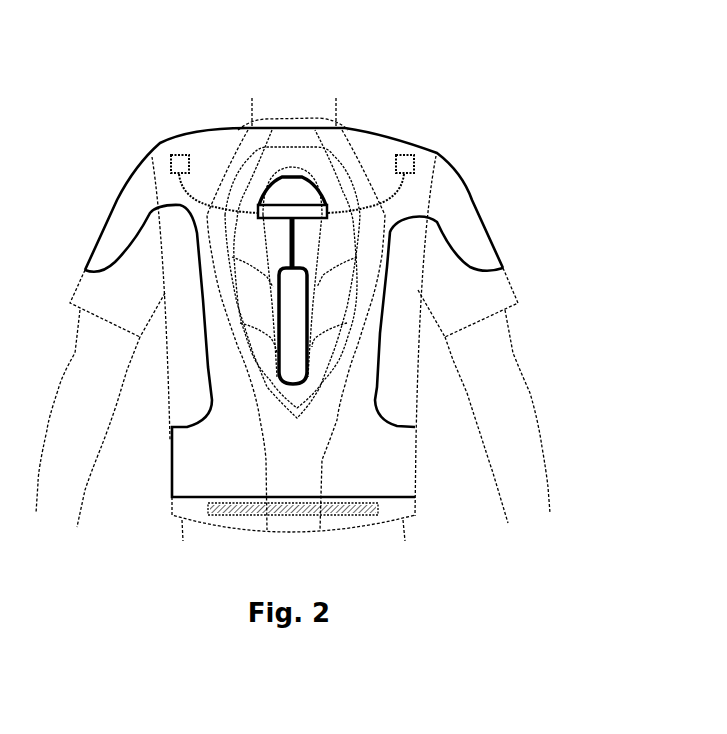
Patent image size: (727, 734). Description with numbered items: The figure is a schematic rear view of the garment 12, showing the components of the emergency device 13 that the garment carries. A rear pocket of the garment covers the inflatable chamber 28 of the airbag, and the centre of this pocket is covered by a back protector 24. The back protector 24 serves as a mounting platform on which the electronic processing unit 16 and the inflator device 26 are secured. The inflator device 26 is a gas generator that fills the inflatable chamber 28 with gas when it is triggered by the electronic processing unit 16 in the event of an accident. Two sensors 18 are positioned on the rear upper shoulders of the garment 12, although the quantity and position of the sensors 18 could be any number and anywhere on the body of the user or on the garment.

The garment 12 is at (522, 126).
The emergency device 13 is at (257, 149).
The electronic processing unit 16 is at (220, 268).
The sensors 18 is at (181, 154).
The back protector 24 is at (355, 152).
The inflator device 26 is at (285, 358).
The inflatable chamber 28 is at (215, 152).